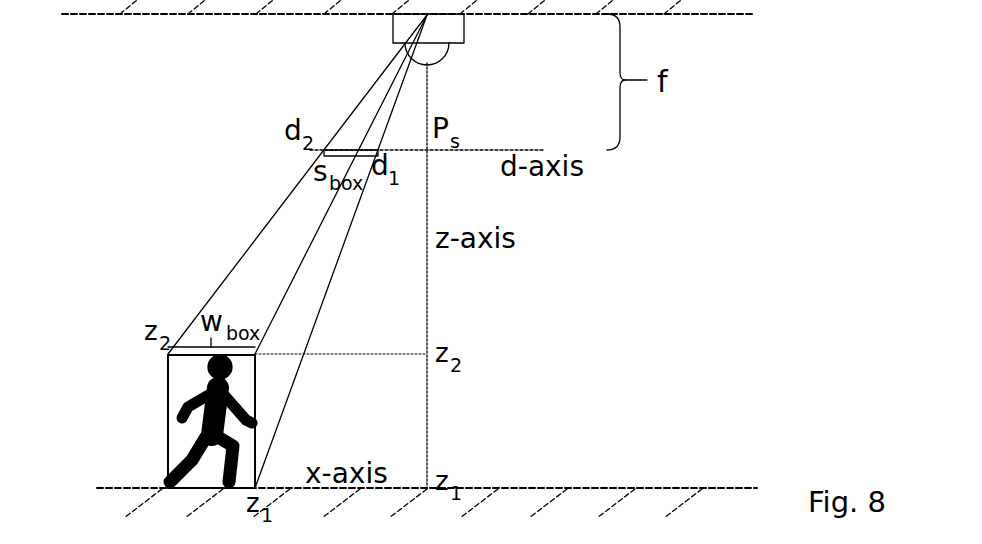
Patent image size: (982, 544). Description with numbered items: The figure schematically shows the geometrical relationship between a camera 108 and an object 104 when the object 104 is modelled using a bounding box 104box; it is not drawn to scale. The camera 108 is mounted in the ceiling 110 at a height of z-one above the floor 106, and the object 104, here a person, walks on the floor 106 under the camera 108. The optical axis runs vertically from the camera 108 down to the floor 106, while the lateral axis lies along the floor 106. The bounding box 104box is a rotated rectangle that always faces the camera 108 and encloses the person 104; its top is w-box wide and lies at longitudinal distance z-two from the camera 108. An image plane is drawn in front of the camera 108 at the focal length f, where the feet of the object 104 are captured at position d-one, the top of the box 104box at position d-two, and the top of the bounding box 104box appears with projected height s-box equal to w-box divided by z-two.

The object 104 is at (183, 403).
The bounding box 104box is at (168, 455).
The floor 106 is at (567, 488).
The camera 108 is at (464, 28).
The ceiling 110 is at (133, 15).